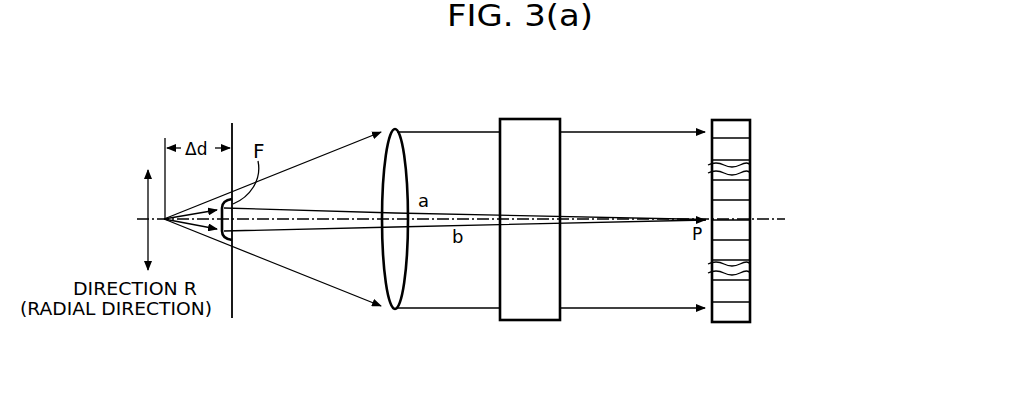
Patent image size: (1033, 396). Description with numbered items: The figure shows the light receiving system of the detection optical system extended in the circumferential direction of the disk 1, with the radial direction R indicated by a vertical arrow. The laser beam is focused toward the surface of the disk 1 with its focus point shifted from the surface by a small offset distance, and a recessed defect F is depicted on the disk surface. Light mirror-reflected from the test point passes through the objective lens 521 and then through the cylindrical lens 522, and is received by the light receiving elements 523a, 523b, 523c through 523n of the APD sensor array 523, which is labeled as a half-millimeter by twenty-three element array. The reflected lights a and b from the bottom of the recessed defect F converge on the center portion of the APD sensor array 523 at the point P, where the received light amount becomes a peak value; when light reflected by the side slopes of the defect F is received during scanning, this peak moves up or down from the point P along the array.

The disk 1 is at (218, 307).
The objective lens 521 is at (394, 128).
The cylindrical lens 522 is at (531, 119).
The APD sensor array 523 is at (763, 199).
The light receiving element 523a is at (742, 128).
The light receiving element 523b is at (742, 150).
The light receiving element 523c is at (752, 164).
The light receiving element 523n is at (745, 311).